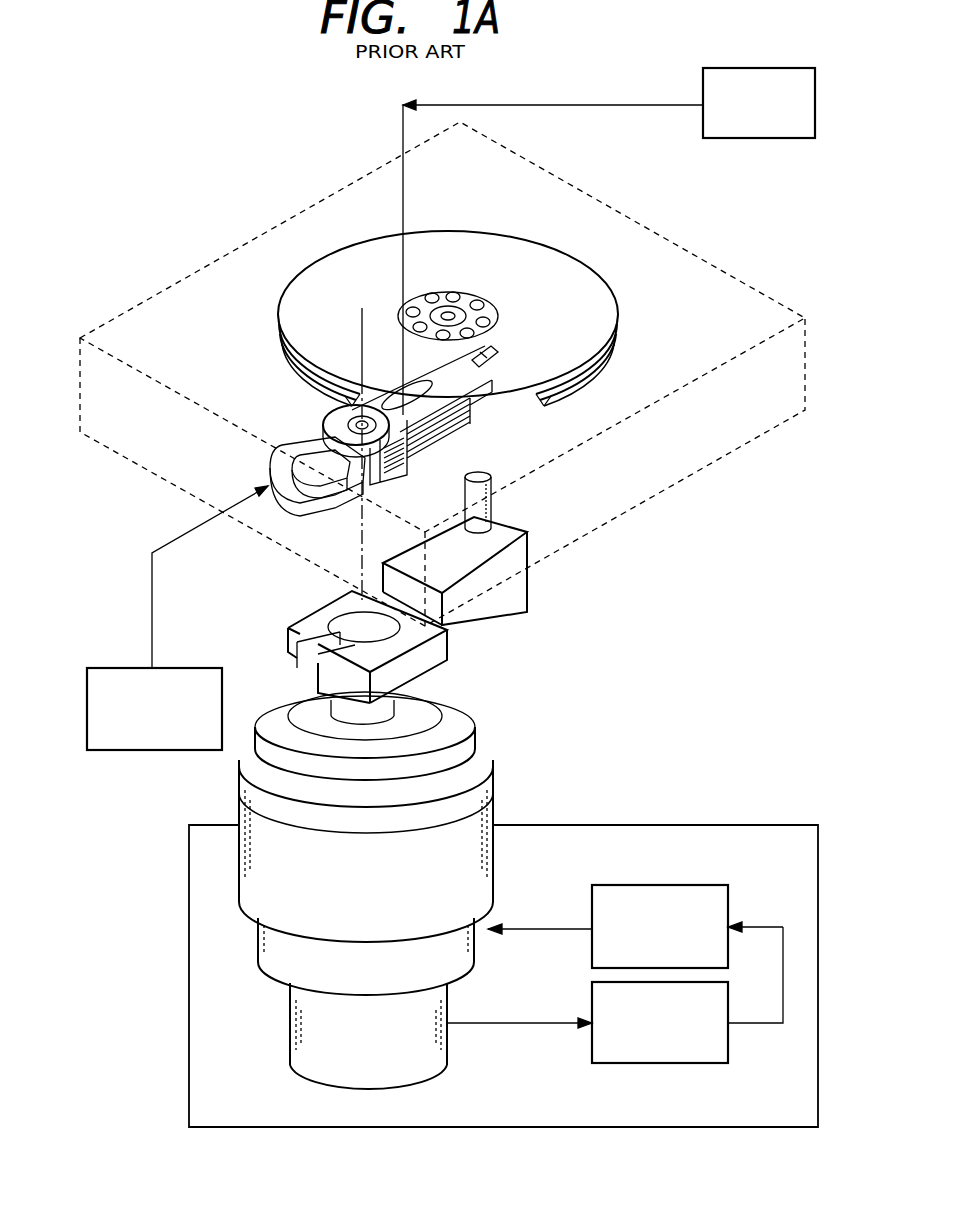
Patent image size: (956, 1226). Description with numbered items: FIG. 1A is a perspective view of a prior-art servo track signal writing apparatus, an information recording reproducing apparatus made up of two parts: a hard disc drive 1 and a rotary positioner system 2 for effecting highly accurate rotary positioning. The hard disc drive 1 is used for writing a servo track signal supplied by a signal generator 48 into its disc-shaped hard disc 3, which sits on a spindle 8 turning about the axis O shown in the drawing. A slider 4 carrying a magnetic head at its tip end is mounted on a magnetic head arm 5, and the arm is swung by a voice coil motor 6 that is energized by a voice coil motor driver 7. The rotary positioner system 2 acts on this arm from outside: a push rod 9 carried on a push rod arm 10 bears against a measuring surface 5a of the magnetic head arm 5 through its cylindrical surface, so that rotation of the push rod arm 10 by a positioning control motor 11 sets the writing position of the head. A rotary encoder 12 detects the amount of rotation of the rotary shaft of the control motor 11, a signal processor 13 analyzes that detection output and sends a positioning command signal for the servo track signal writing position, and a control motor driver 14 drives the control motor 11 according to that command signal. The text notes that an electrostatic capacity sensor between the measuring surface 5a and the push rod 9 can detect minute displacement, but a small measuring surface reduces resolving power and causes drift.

The hard disc drive 1 is at (296, 215).
The rotary positioner system 2 is at (189, 862).
The hard disc 3 is at (528, 250).
The slider 4 is at (497, 352).
The magnetic head arm 5 is at (427, 425).
The measuring surface 5a is at (405, 428).
The voice coil motor 6 is at (290, 465).
The voice coil motor driver 7 is at (110, 668).
The spindle 8 is at (447, 315).
The push rod 9 is at (493, 507).
The push rod arm 10 is at (475, 633).
The positioning control motor 11 is at (480, 858).
The rotary encoder 12 is at (290, 1040).
The signal processor 13 is at (698, 1063).
The control motor driver 14 is at (706, 885).
The signal generator 48 is at (776, 68).
The rotation axis O is at (360, 330).